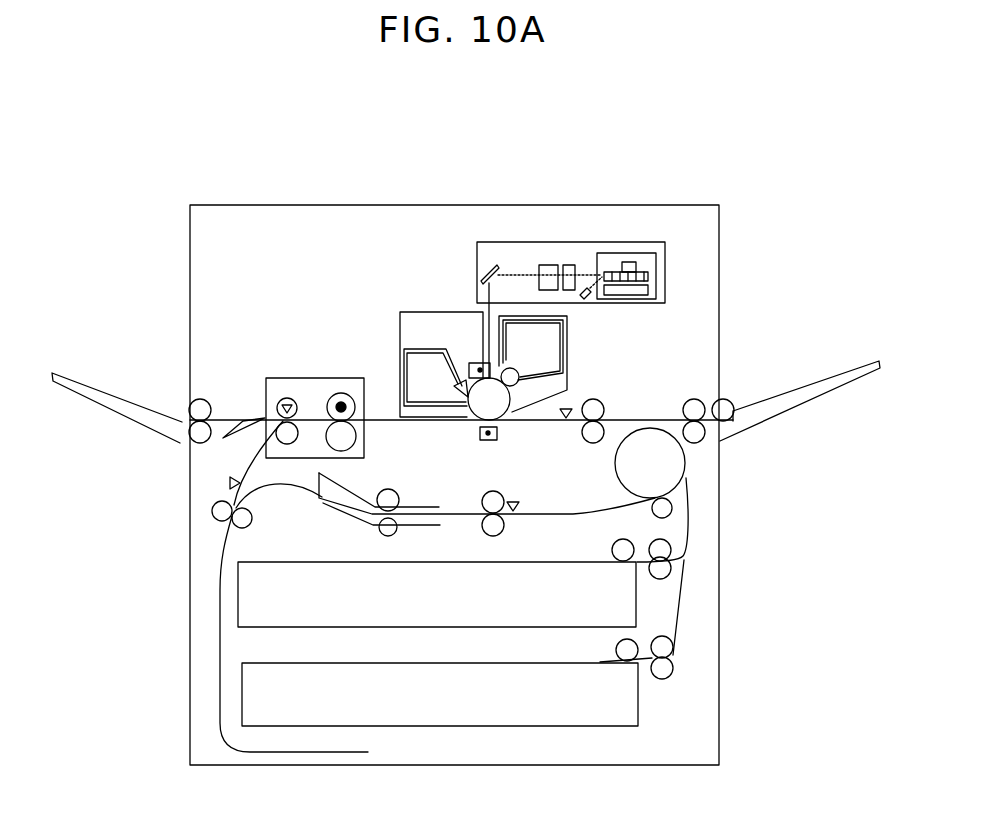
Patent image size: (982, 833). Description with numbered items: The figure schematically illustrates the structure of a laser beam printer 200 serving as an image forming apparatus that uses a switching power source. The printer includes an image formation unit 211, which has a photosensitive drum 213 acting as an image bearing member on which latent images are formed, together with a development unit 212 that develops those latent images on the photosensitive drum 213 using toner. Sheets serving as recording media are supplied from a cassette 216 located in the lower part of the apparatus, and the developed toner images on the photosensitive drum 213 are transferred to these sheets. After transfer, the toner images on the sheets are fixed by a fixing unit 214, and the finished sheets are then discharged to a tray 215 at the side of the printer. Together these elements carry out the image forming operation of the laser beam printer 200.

The laser beam printer 200 is at (392, 214).
The image formation unit 211 is at (434, 312).
The development unit 212 is at (515, 369).
The photosensitive drum 213 is at (478, 414).
The fixing unit 214 is at (317, 379).
The tray 215 is at (116, 396).
The cassette 216 is at (630, 697).